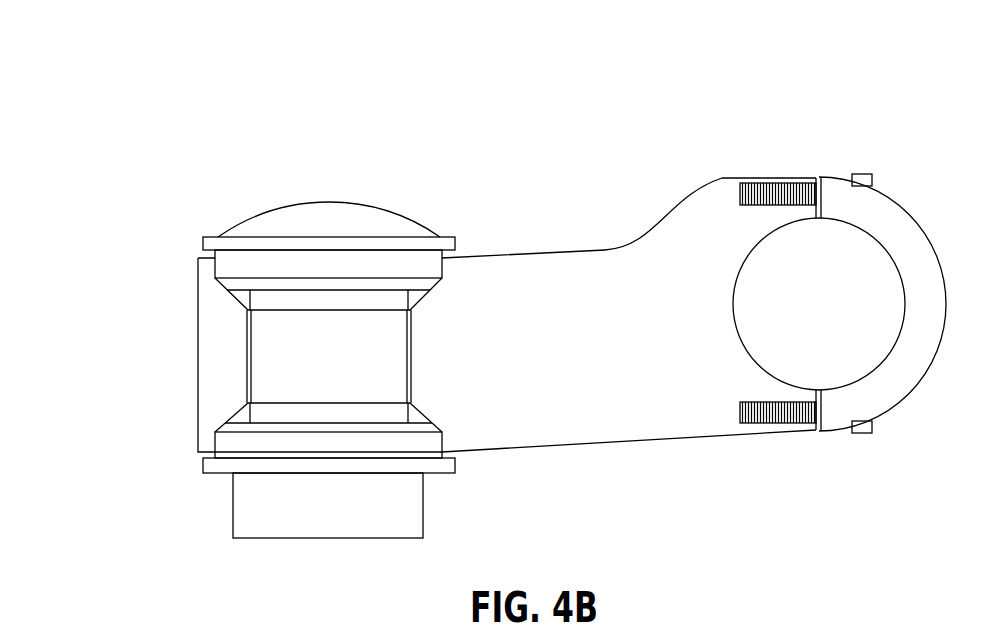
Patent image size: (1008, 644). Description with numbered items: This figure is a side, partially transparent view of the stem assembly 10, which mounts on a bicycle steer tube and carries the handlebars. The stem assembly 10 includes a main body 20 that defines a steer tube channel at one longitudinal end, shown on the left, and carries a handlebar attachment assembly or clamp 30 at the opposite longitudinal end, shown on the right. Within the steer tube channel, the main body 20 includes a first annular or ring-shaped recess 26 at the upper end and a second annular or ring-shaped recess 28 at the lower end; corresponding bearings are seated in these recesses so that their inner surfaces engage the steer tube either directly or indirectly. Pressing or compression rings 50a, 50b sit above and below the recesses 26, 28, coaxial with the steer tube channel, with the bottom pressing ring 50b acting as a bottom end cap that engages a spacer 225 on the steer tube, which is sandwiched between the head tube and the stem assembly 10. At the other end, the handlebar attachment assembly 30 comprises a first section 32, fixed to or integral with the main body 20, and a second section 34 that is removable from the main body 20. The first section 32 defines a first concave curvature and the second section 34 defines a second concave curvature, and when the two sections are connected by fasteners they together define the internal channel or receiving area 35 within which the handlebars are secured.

The stem assembly 10 is at (548, 190).
The main body 20 is at (613, 293).
The first annular recess 26 is at (215, 285).
The second annular recess 28 is at (217, 433).
The handlebar attachment assembly 30 is at (823, 145).
The first section 32 is at (772, 178).
The second section 34 is at (900, 232).
The receiving area 35 is at (838, 317).
The pressing ring 50a is at (203, 242).
The pressing ring 50b is at (203, 468).
The spacer 225 is at (252, 532).